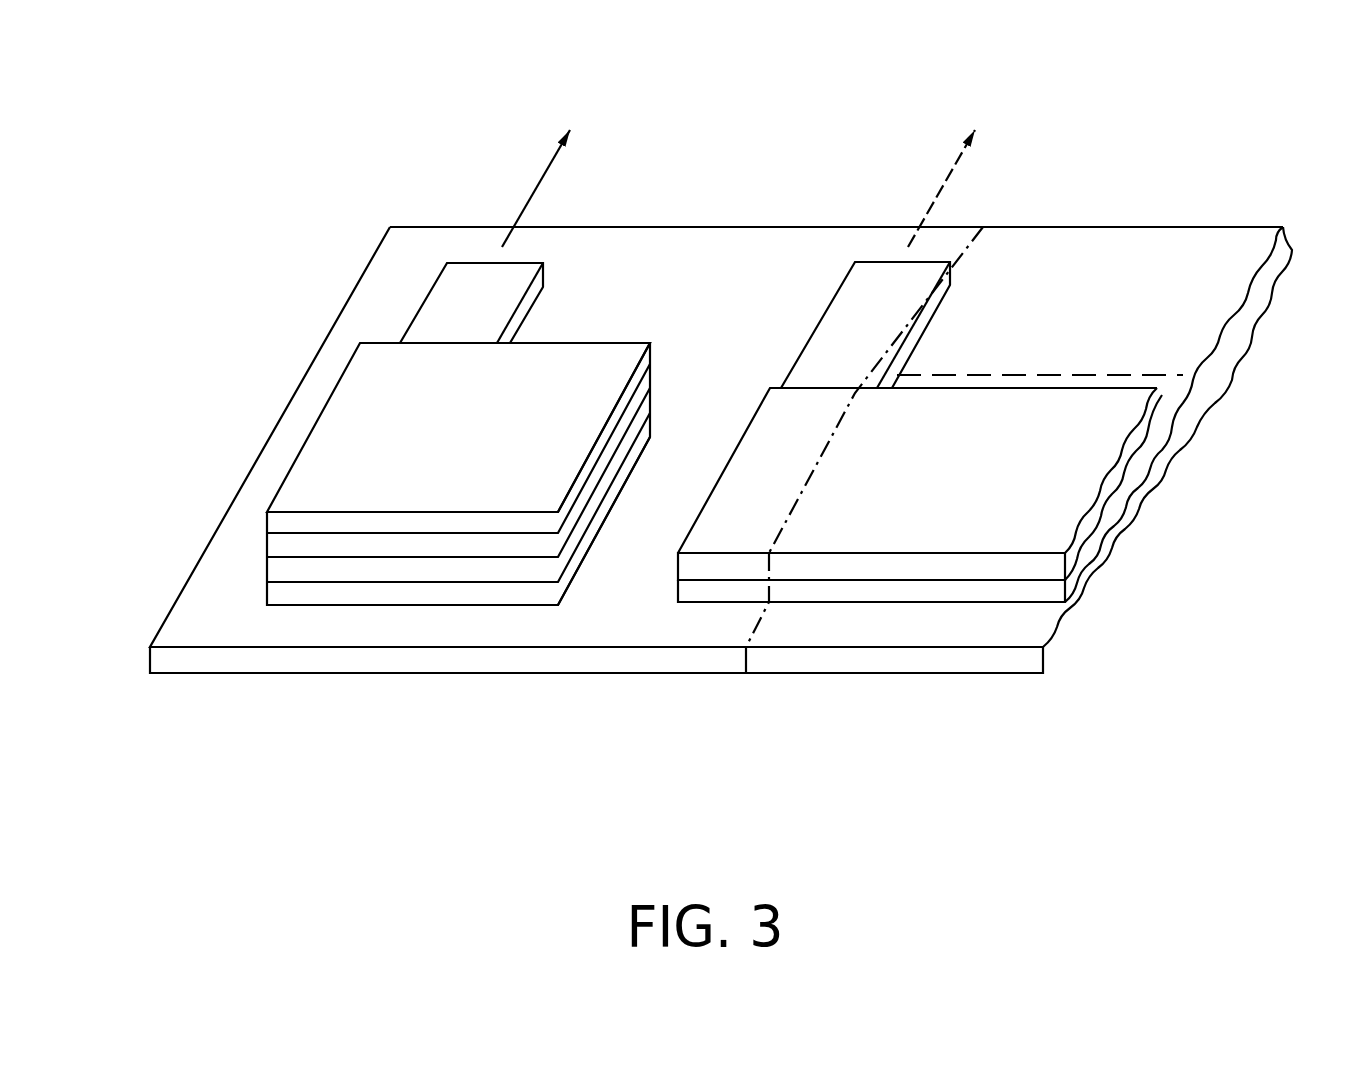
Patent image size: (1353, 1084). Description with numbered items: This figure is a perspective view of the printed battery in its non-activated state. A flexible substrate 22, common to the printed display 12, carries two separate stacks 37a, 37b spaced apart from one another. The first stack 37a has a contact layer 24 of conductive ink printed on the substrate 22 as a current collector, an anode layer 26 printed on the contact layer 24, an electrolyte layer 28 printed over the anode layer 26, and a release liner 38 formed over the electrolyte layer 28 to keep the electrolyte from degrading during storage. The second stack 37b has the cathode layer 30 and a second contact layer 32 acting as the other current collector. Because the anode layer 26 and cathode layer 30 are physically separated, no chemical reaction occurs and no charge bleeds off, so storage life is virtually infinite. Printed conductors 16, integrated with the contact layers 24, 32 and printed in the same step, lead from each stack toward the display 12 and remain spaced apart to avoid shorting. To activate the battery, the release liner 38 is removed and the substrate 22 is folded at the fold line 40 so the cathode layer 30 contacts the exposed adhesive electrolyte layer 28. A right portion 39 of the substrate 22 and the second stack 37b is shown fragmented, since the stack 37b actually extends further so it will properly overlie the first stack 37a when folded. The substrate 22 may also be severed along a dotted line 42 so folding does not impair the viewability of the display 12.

The printed display 12 is at (768, 167).
The printed conductors 16 is at (473, 302).
The substrate 22 is at (1100, 275).
The contact layer 24 is at (305, 592).
The anode layer 26 is at (357, 570).
The electrolyte layer 28 is at (425, 547).
The cathode layer 30 is at (910, 565).
The second contact layer 32 is at (850, 588).
The first stack 37a is at (421, 554).
The second stack 37b is at (917, 527).
The release liner 38 is at (475, 522).
The right portion 39 is at (1168, 350).
The fold line 40 is at (748, 623).
The dotted line 42 is at (1110, 375).